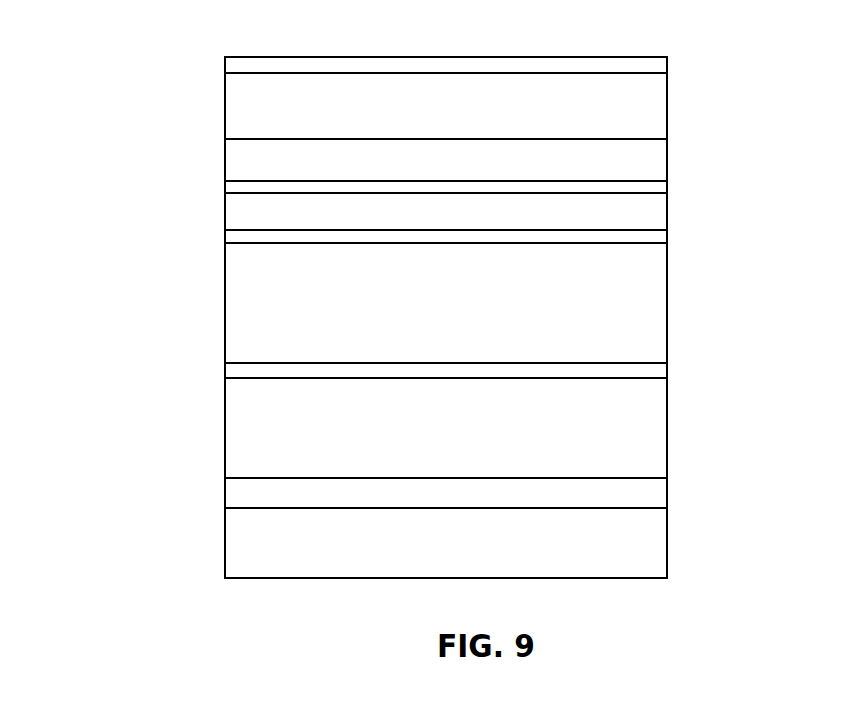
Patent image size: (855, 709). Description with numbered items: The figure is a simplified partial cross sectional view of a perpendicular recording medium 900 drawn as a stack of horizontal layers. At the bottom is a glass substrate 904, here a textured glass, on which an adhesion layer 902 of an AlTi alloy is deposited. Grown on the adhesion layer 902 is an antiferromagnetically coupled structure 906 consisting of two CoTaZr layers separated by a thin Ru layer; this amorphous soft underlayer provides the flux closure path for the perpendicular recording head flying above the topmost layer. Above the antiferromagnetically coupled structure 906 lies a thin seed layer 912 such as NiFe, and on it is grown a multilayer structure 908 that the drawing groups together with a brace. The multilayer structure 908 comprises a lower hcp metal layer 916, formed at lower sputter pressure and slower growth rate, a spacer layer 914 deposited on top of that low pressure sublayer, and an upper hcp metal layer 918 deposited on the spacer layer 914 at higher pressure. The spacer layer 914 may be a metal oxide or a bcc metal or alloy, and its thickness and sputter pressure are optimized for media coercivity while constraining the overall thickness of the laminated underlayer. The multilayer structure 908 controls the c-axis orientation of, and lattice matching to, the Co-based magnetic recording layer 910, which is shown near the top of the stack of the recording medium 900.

The recording medium 900 is at (154, 107).
The adhesion layer 902 is at (667, 494).
The glass substrate 904 is at (667, 540).
The antiferromagnetically coupled (AFC) structure 906 is at (697, 245).
The multilayer structure 908 is at (435, 177).
The magnetic recording layer 910 is at (667, 106).
The seed layer 912 is at (667, 236).
The spacer layer 914 is at (667, 185).
The lower hcp metal layer 916 is at (667, 208).
The upper hcp metal layer 918 is at (667, 155).